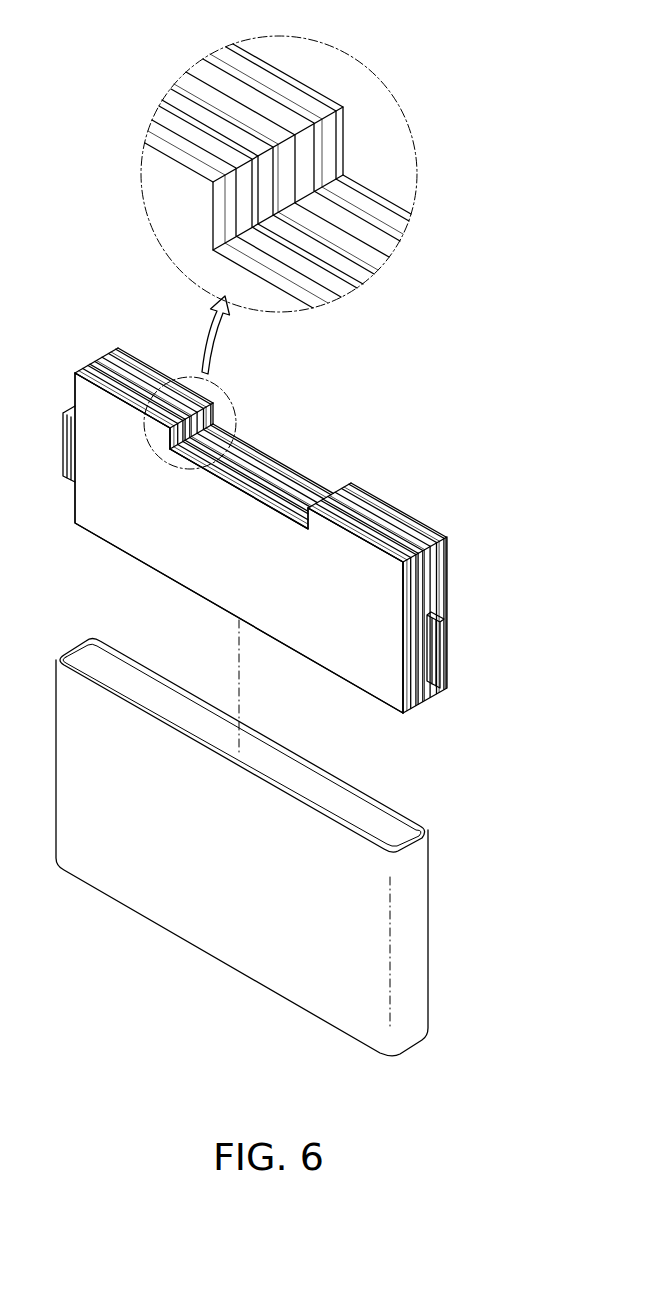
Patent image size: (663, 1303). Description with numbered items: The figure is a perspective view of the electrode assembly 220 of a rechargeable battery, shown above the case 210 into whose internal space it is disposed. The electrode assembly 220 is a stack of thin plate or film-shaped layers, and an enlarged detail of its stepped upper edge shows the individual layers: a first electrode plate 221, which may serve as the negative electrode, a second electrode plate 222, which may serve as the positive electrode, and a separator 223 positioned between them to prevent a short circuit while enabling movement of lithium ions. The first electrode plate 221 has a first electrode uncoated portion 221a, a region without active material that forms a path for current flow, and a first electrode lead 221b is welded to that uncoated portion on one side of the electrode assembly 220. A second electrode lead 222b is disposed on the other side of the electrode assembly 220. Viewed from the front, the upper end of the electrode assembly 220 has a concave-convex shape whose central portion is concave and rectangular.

The case 210 is at (412, 948).
The electrode assembly 220 is at (443, 706).
The first electrode plate 221 is at (163, 150).
The first electrode uncoated portion 221a is at (82, 467).
The first electrode lead 221b is at (63, 431).
The second electrode plate 222 is at (167, 93).
The second electrode lead 222b is at (432, 643).
The separator 223 is at (155, 120).